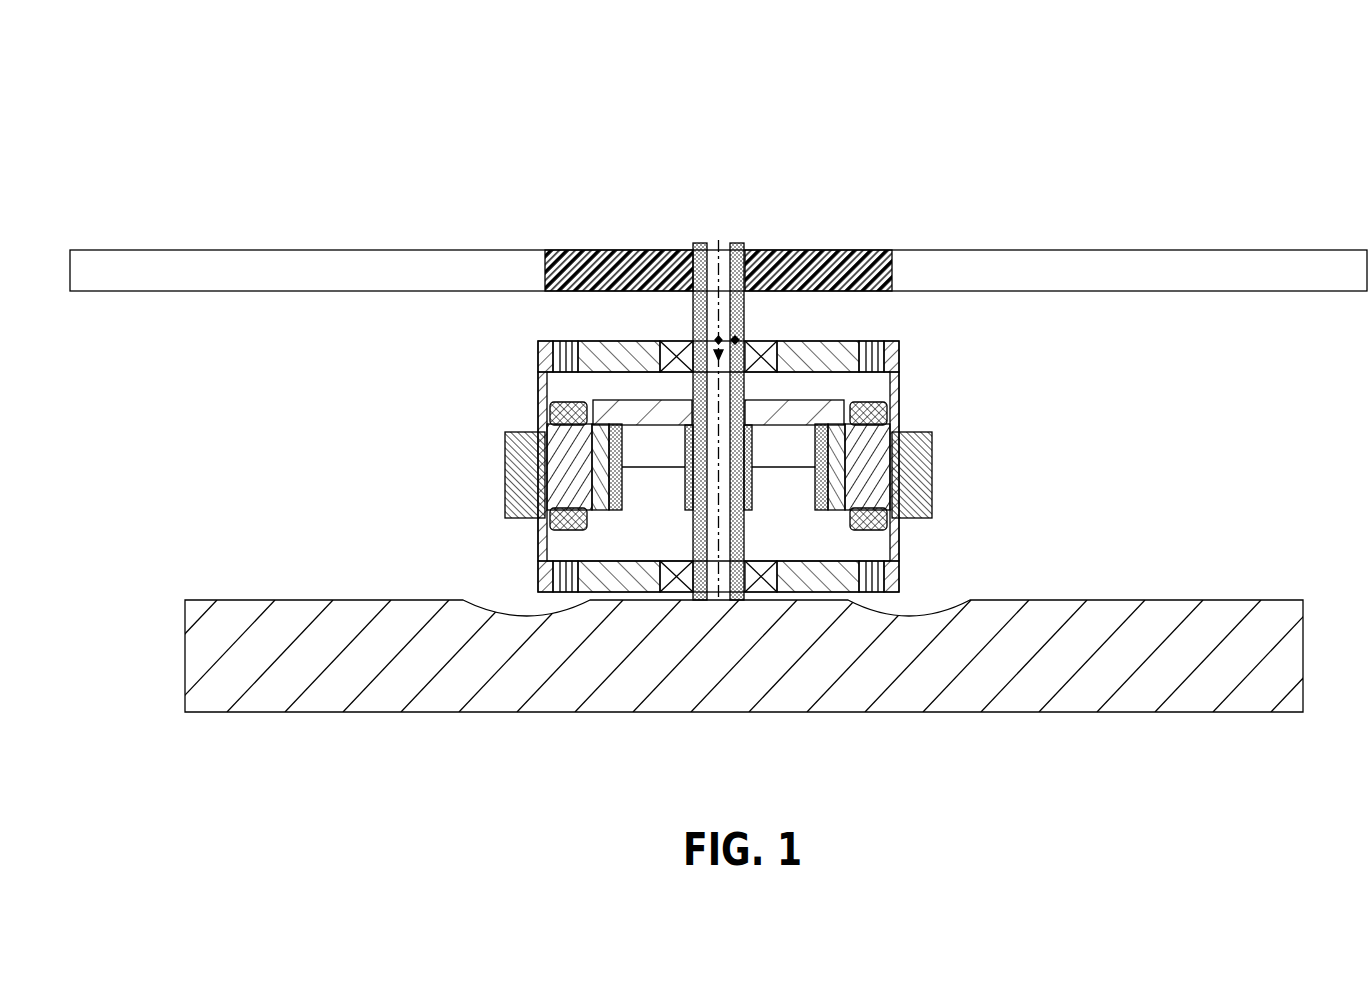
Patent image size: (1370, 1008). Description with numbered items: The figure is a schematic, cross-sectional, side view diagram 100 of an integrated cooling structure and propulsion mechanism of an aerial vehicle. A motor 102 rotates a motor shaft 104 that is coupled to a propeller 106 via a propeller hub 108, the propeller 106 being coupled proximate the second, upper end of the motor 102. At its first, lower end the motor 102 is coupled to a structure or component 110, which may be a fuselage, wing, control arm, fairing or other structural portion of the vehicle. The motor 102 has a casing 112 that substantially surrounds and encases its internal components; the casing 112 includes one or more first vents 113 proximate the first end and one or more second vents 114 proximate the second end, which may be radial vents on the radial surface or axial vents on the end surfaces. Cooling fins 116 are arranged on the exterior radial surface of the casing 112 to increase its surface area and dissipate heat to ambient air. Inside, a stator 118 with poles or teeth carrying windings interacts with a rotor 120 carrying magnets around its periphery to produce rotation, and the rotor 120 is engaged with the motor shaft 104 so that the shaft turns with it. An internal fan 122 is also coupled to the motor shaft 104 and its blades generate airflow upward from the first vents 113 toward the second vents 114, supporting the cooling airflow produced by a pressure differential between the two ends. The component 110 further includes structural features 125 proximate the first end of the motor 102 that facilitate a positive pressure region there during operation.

The schematic, cross-sectional, side view diagram 100 is at (1210, 95).
The motor 102 is at (490, 338).
The motor shaft 104 is at (735, 245).
The propeller 106 is at (1238, 250).
The propeller hub 108 is at (853, 250).
The structure or component 110 is at (1303, 656).
The casing 112 is at (893, 342).
The first vents 113 is at (900, 545).
The second vents 114 is at (870, 341).
The cooling fins 116 is at (930, 430).
The stator 118 is at (850, 528).
The rotor 120 is at (813, 492).
The internal fan 122 is at (790, 397).
The structural features 125 is at (934, 600).